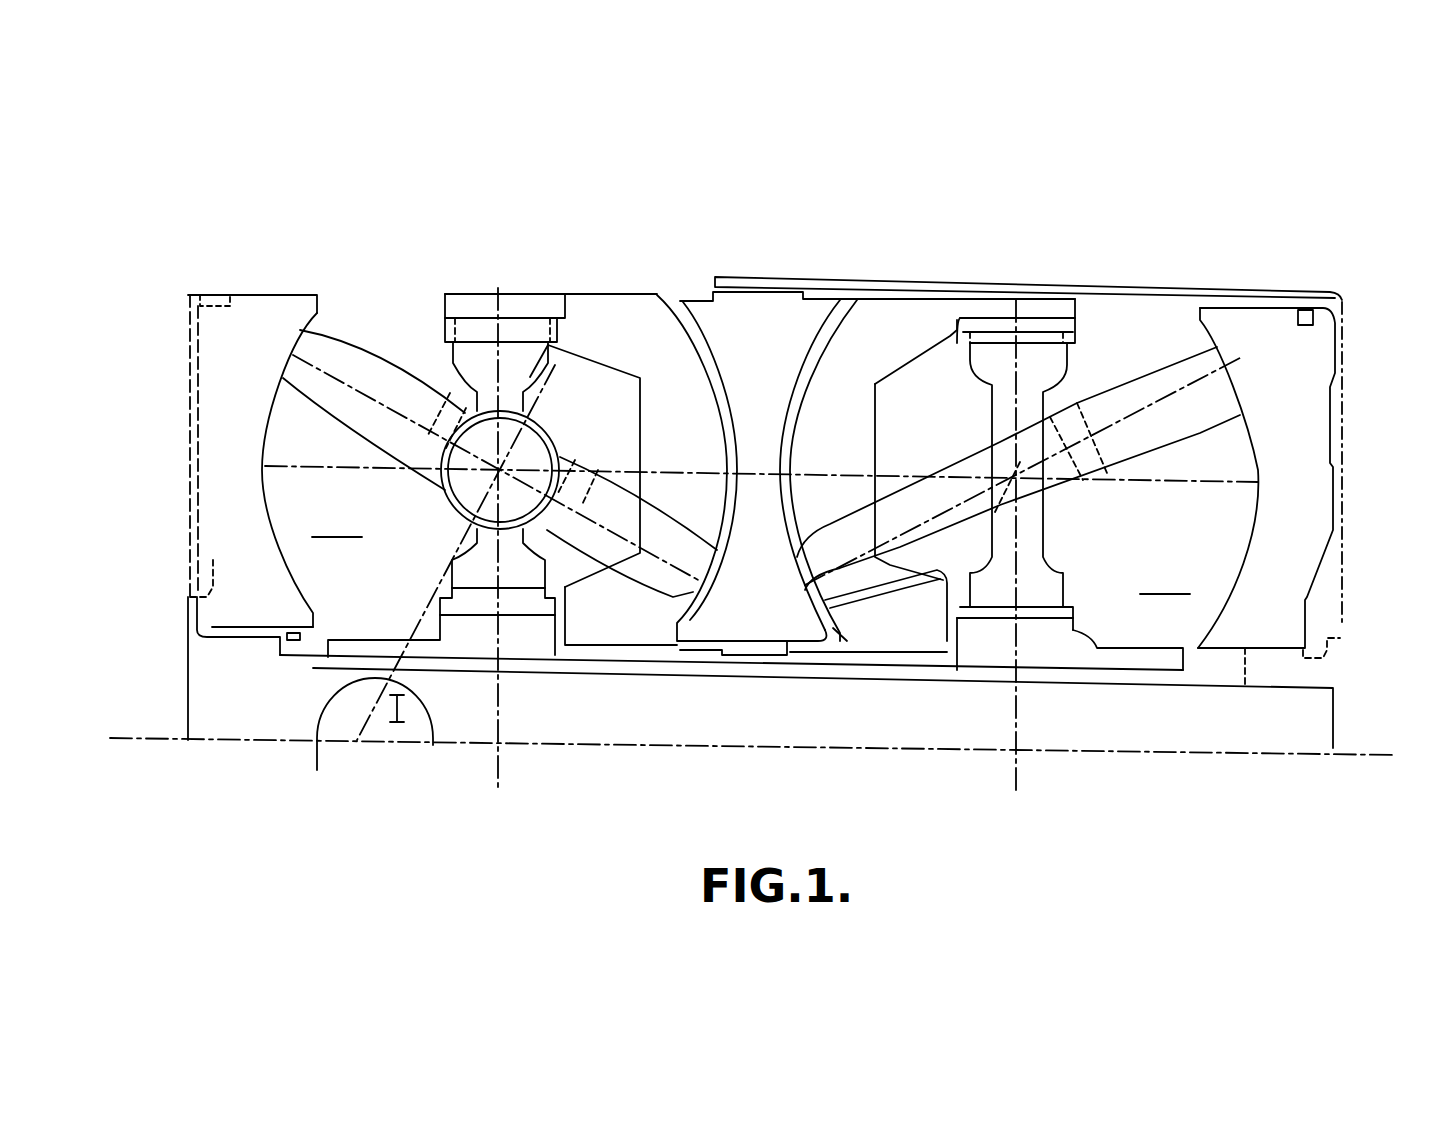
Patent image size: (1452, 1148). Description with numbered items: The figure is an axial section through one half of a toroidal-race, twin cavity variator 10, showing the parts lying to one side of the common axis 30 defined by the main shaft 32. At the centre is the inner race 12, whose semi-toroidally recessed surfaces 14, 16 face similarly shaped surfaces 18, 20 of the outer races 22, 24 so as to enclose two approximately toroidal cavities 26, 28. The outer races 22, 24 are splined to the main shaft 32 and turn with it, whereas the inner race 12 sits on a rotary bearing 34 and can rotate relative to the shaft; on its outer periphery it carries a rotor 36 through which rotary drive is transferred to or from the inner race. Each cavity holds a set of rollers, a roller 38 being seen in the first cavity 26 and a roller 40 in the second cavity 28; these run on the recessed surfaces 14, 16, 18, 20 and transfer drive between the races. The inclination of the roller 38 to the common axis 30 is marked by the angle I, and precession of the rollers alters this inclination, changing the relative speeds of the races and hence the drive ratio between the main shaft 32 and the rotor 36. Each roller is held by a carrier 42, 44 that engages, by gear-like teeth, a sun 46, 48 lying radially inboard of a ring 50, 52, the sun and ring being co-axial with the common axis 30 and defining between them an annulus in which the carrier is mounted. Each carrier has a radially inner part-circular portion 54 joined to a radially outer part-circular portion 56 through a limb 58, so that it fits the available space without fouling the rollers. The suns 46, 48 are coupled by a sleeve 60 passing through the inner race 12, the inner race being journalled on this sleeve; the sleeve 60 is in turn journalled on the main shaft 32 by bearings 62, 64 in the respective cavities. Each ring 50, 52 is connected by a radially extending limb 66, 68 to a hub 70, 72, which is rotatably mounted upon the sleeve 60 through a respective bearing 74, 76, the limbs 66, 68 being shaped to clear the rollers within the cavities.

The variator 10 is at (943, 213).
The inner race 12 is at (705, 297).
The semi-toroidally recessed surface 14 is at (703, 346).
The semi-toroidally recessed surface 16 is at (855, 298).
The recessed surface 18 is at (317, 313).
The recessed surface 20 is at (1174, 300).
The outer race 22 is at (248, 294).
The outer race 24 is at (1277, 292).
The toroidal cavity 26 is at (337, 517).
The toroidal cavity 28 is at (1165, 575).
The common axis 30 is at (1283, 757).
The main shaft 32 is at (1333, 750).
The rotary bearing 34 is at (745, 656).
The rotor 36 is at (1040, 292).
The roller 38 is at (377, 352).
The roller 40 is at (1163, 447).
The carrier 42 is at (565, 322).
The carrier 44 is at (1117, 290).
The sun 46 is at (555, 628).
The sun 48 is at (1100, 650).
The ring 50 is at (487, 294).
The ring 52 is at (988, 297).
The radially inner part-circular portion 54 is at (1067, 593).
The radially outer part-circular portion 56 is at (892, 298).
The limb 58 is at (985, 418).
The sleeve 60 is at (650, 645).
The bearing 62 is at (363, 747).
The bearing 64 is at (1155, 668).
The radially extending limb 66 is at (640, 453).
The radially extending limb 68 is at (907, 578).
The hub 70 is at (697, 650).
The hub 72 is at (822, 645).
The bearing 74 is at (637, 650).
The bearing 76 is at (838, 632).